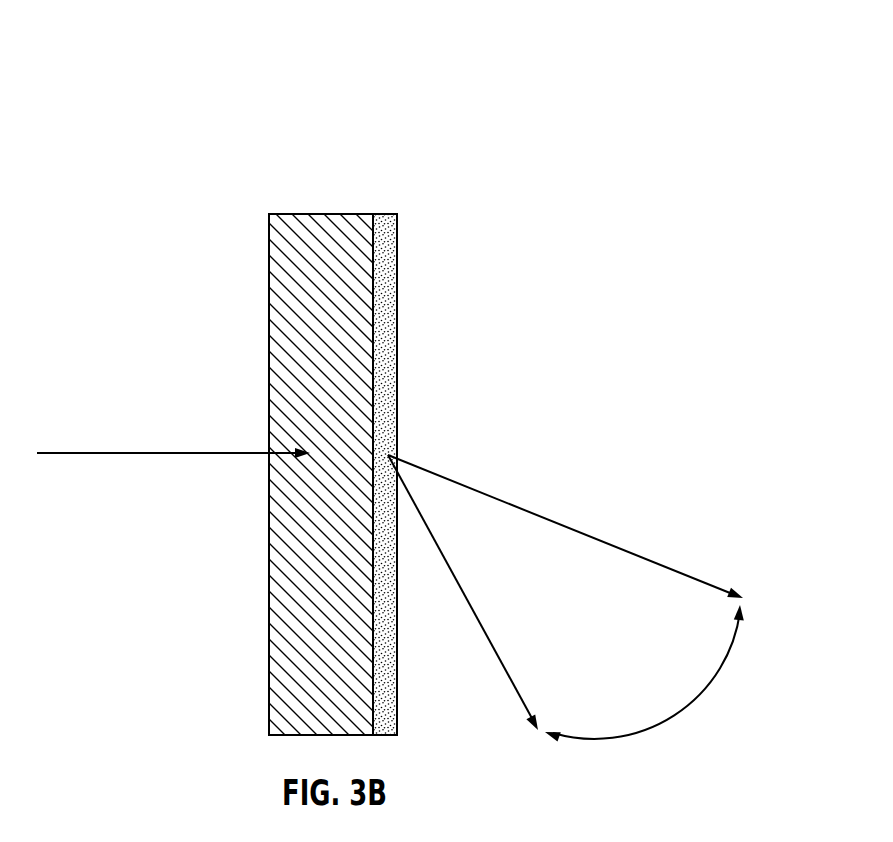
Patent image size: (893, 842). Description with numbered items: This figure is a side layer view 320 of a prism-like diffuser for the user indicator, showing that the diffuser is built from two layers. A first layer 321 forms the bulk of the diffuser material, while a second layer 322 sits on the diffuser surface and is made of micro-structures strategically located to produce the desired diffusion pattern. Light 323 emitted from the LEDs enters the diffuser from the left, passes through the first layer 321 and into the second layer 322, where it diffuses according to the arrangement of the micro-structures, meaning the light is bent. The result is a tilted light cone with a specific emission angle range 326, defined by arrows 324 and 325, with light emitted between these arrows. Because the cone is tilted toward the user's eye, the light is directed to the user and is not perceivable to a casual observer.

The side layer view 320 is at (296, 68).
The first layer 321 is at (297, 214).
The second layer 322 is at (385, 214).
The light 323 is at (82, 453).
The arrow 324 is at (562, 523).
The arrow 325 is at (476, 612).
The emission angle range 326 is at (705, 701).